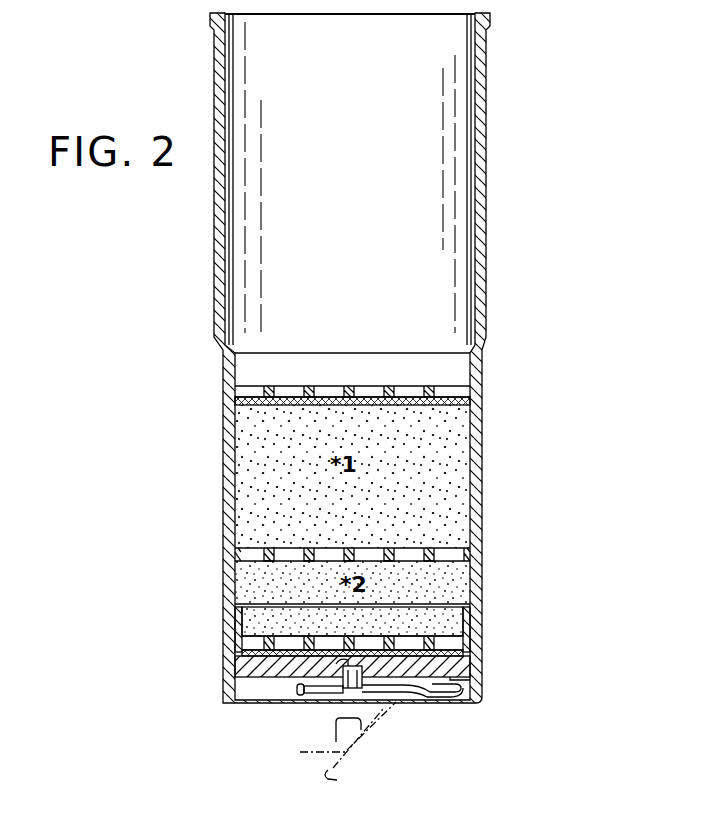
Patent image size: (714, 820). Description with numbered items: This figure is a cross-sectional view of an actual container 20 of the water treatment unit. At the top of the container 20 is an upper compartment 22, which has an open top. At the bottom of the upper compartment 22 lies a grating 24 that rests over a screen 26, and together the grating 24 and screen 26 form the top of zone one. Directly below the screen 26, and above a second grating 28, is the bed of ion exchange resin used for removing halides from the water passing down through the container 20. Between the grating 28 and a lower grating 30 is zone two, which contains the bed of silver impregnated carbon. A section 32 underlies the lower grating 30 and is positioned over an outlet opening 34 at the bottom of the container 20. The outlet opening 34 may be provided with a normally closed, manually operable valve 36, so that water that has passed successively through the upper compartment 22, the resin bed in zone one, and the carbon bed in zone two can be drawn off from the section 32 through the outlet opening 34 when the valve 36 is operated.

The container 20 is at (483, 236).
The upper compartment 22 is at (362, 210).
The grating 24 is at (308, 397).
The screen 26 is at (408, 400).
The grating 28 is at (430, 548).
The lower grating 30 is at (391, 638).
The section 32 is at (224, 672).
The outlet opening 34 is at (341, 660).
The normally closed manually operable valve 36 is at (347, 690).